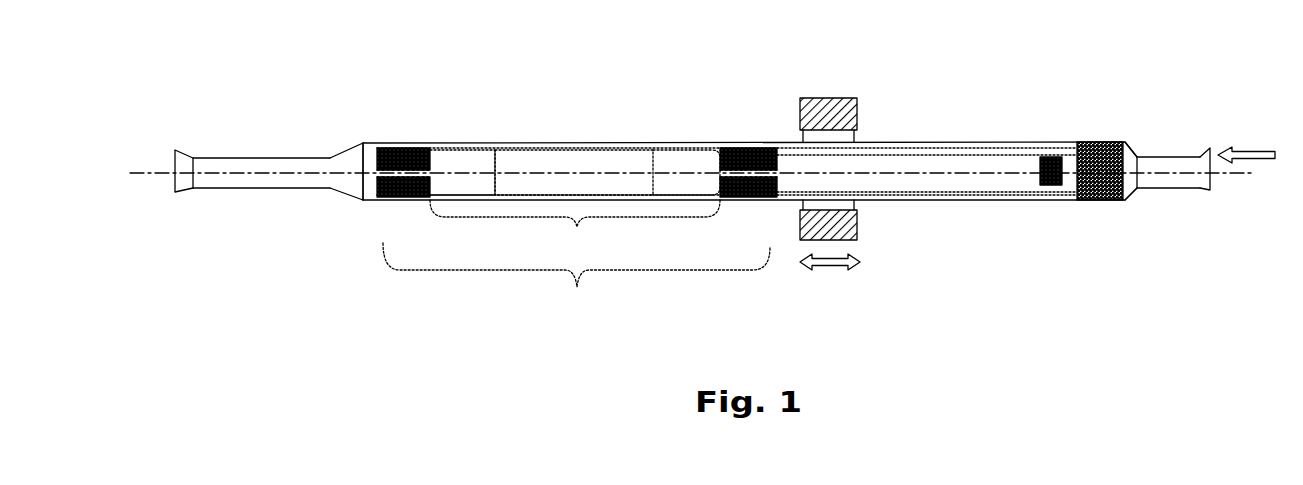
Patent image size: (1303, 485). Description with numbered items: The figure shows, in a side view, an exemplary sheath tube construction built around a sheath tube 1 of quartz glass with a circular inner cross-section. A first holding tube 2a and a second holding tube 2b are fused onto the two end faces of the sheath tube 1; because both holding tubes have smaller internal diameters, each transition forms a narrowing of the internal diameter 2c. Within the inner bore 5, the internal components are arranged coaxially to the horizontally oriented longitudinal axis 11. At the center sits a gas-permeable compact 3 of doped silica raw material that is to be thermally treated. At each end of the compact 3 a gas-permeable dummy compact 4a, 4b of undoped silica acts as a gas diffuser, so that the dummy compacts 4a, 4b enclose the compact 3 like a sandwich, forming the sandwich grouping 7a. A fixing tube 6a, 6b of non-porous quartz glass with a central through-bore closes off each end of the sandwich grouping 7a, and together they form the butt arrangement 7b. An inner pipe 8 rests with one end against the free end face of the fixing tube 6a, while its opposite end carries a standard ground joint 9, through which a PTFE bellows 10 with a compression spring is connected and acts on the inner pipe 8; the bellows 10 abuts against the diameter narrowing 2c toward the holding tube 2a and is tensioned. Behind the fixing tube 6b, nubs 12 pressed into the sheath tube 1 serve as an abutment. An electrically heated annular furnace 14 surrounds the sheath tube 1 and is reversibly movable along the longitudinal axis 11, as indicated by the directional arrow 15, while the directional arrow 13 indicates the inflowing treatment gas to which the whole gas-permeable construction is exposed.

The sheath tube 1 is at (897, 141).
The first holding tube 2a is at (1168, 157).
The second holding tube 2b is at (277, 158).
The narrowing of the internal diameter 2c is at (1127, 193).
The compact 3 is at (560, 165).
The dummy compact 4a is at (693, 153).
The dummy compact 4b is at (460, 160).
The inner bore 5 is at (908, 192).
The fixing tube 6a is at (745, 148).
The fixing tube 6b is at (394, 155).
The sandwich grouping 7a is at (575, 233).
The butt arrangement 7b is at (576, 286).
The inner pipe 8 is at (970, 163).
The standard ground joint 9 is at (1058, 180).
The bellows 10 is at (1090, 150).
The longitudinal axis 11 is at (147, 173).
The nubs 12 is at (368, 146).
The directional arrow 13 is at (1243, 148).
The annular furnace 14 is at (851, 108).
The directional arrow 15 is at (819, 264).